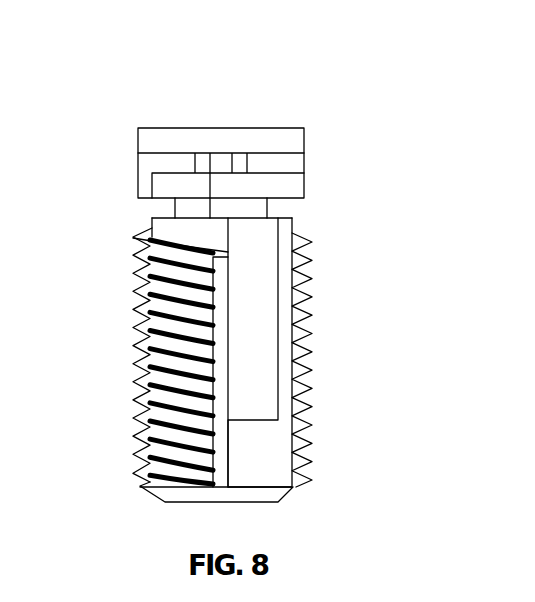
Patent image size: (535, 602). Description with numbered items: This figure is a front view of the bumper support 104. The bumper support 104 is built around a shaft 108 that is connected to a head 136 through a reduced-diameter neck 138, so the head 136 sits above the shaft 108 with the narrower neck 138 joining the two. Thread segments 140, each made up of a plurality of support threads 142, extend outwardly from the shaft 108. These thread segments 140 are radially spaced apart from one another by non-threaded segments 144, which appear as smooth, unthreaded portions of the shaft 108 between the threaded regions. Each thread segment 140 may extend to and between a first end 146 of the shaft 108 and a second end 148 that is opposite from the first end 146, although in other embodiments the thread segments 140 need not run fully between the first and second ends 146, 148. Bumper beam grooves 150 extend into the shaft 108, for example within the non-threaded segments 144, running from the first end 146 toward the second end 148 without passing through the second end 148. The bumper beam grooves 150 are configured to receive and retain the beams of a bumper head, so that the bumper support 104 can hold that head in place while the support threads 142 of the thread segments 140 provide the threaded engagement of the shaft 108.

The bumper support 104 is at (120, 99).
The shaft 108 is at (137, 422).
The head 136 is at (304, 133).
The reduced-diameter neck 138 is at (268, 205).
The thread segments 140 is at (137, 276).
The support threads 142 is at (135, 307).
The non-threaded segments 144 is at (260, 455).
The first end 146 is at (153, 222).
The second end 148 is at (187, 503).
The bumper beam grooves 150 is at (253, 307).